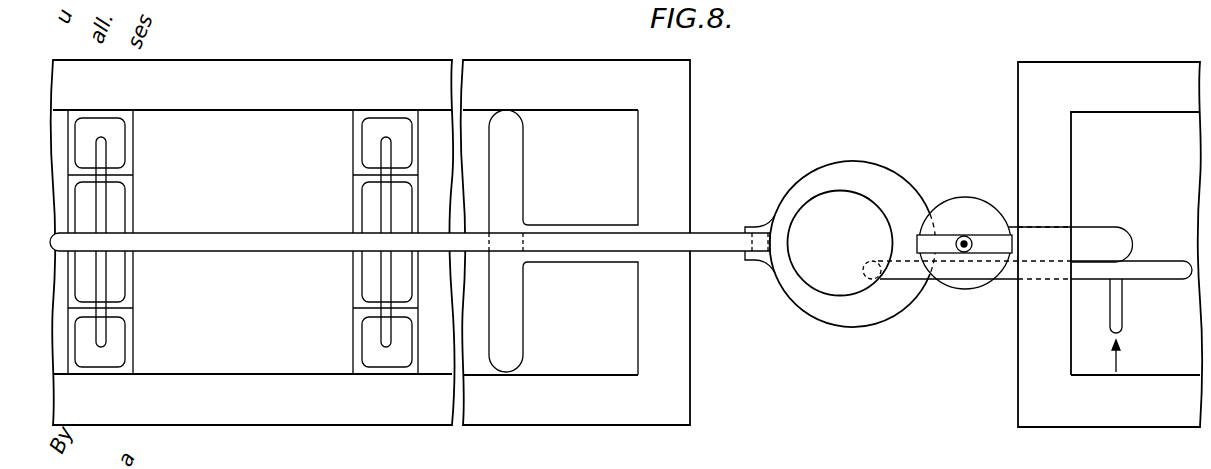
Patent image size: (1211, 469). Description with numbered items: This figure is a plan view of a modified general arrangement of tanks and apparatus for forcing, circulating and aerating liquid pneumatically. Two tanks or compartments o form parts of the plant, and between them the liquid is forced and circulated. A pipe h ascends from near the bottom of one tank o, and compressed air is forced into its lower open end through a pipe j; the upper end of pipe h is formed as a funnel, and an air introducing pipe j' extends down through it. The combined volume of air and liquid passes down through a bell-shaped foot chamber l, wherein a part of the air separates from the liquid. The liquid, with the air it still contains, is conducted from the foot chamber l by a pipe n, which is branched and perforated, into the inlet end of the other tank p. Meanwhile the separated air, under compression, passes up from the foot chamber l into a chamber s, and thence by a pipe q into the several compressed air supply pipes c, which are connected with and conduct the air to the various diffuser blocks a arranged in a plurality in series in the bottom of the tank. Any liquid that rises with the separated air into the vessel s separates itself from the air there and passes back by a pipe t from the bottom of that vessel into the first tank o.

The tank p is at (370, 242).
The diffuser blocks a is at (113, 197).
The compressed air supply pipes c is at (105, 288).
The pipe q is at (230, 240).
The pipe n is at (546, 232).
The foot chamber l is at (888, 185).
The chamber s is at (840, 243).
The pipe h is at (980, 208).
The air introducing pipe j' is at (972, 277).
The pipe t is at (906, 280).
The pipe j is at (1126, 325).
The tanks or compartments o is at (1110, 244).